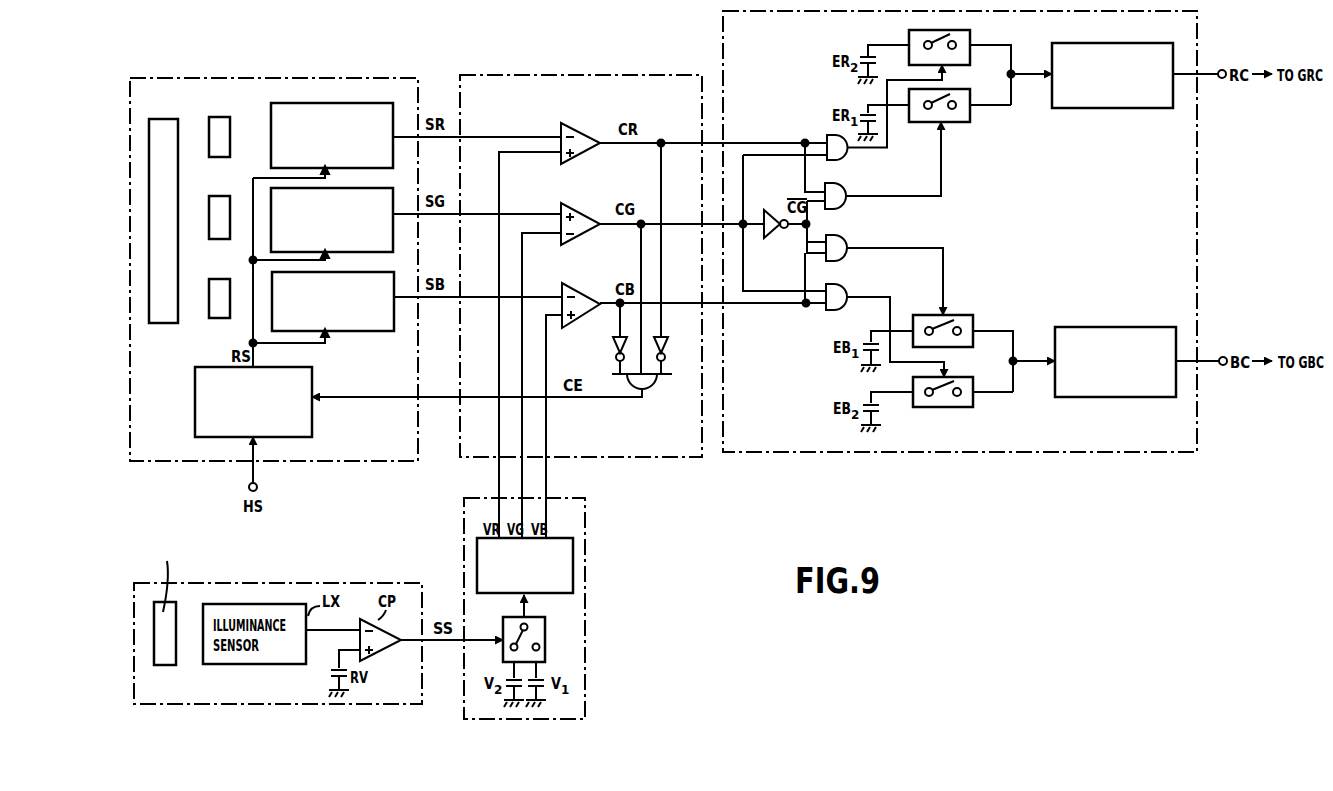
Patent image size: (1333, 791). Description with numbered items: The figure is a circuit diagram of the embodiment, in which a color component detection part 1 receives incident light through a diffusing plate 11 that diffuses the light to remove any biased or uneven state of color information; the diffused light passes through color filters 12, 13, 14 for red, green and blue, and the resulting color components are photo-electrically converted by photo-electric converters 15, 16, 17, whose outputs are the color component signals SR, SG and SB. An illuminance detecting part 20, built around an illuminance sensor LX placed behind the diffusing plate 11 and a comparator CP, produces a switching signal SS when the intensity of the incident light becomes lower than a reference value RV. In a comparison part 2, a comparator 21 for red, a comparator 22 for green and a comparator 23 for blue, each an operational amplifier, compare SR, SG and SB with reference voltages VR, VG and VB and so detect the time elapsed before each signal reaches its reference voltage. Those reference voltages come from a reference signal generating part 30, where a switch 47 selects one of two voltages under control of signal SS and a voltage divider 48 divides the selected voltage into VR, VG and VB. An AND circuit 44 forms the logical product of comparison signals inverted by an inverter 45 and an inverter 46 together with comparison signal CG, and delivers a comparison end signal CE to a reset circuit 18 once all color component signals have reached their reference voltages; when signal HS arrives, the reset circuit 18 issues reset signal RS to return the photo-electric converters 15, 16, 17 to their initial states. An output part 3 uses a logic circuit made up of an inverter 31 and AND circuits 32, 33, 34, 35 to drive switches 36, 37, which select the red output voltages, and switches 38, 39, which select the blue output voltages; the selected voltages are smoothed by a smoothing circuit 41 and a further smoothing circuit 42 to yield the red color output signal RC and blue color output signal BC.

The color component detection part 1 is at (268, 78).
The comparison part 2 is at (620, 75).
The output part 3 is at (875, 4).
The diffusing plate 11 is at (166, 118).
The color filter 12 is at (220, 117).
The color filter 13 is at (220, 196).
The color filter 14 is at (220, 279).
The photo-electric converter 15 is at (337, 103).
The photo-electric converter 16 is at (376, 252).
The photo-electric converter 17 is at (366, 331).
The reset circuit 18 is at (195, 392).
The illuminance detecting part 20 is at (320, 583).
The comparator 21 is at (580, 124).
The comparator 22 is at (580, 204).
The comparator 23 is at (579, 284).
The reference signal generating part 30 is at (590, 556).
The inverter 31 is at (768, 210).
The AND circuit 32 is at (844, 189).
The AND circuit 33 is at (828, 134).
The AND circuit 34 is at (845, 242).
The AND circuit 35 is at (846, 290).
The switch 36 is at (966, 124).
The switch 37 is at (972, 33).
The switch 38 is at (960, 315).
The switch 39 is at (964, 407).
The smoothing circuit 41 is at (1104, 327).
The smoothing circuit 42 is at (1108, 108).
The AND circuit 44 is at (654, 388).
The inverter 45 is at (667, 352).
The inverter 46 is at (612, 344).
The switch 47 is at (546, 631).
The voltage divider 48 is at (497, 596).